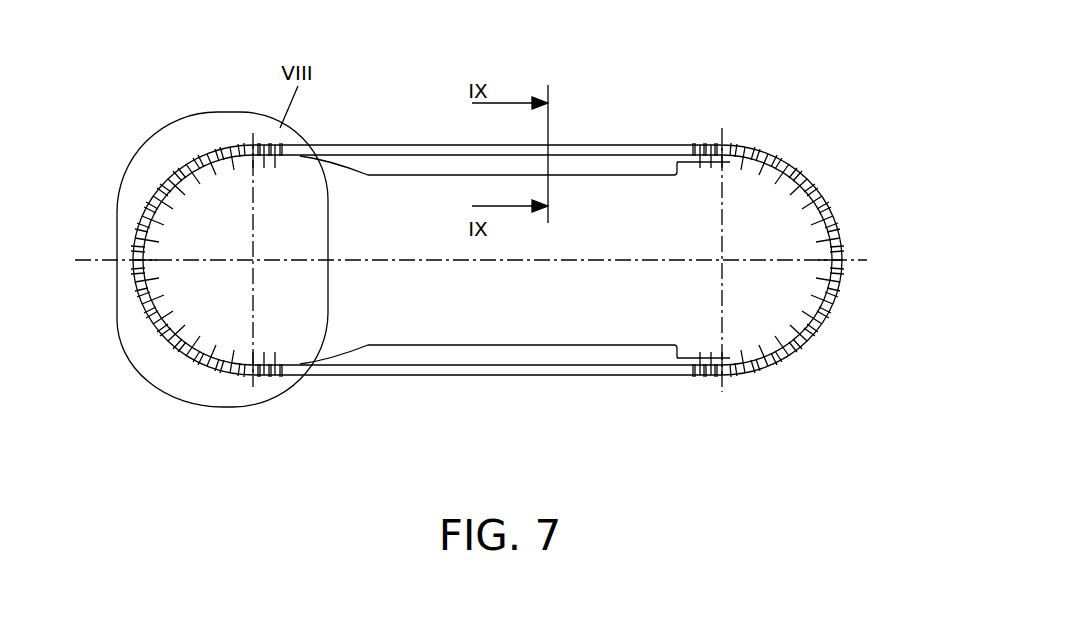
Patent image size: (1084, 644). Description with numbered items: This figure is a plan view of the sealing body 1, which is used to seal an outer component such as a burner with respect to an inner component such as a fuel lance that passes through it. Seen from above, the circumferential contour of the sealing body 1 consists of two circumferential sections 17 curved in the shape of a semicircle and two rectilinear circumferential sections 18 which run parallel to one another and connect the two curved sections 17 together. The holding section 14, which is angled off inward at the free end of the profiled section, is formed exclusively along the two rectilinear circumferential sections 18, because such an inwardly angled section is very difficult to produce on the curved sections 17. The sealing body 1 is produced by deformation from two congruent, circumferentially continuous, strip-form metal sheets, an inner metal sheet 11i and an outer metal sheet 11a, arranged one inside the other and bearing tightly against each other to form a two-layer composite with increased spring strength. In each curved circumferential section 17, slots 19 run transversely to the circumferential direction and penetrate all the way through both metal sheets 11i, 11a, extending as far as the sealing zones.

The sealing body 1 is at (856, 133).
The outer metal sheet 11a is at (629, 376).
The inner metal sheet 11i is at (692, 168).
The holding section 14 is at (633, 176).
The curved circumferential section 17 is at (838, 230).
The rectilinear circumferential section 18 is at (590, 145).
The slot 19 is at (218, 241).